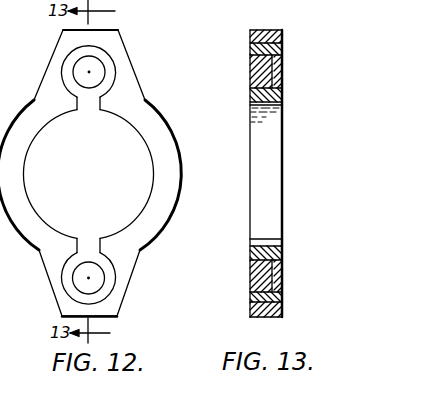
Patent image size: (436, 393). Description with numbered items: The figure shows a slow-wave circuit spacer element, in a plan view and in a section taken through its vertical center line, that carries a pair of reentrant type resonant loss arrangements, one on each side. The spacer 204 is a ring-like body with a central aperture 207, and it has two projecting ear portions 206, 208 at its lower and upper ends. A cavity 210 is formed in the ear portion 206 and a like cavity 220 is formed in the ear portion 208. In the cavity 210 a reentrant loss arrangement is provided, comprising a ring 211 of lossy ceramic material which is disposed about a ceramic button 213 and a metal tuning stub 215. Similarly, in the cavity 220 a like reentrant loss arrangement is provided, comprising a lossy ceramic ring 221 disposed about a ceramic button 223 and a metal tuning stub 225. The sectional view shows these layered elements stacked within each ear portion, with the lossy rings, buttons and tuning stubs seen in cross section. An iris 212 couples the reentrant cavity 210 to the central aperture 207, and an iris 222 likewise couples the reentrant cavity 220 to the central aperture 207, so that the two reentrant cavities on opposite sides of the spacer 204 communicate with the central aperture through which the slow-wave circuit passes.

In FIG. 12, the spacer 204 is at (173, 128).
In FIG. 13, the spacer 204 is at (283, 146).
In FIG. 12, the projecting ear portion 206 is at (123, 298).
In FIG. 13, the projecting ear portion 206 is at (280, 312).
In FIG. 12, the central aperture 207 is at (156, 165).
In FIG. 13, the central aperture 207 is at (258, 150).
In FIG. 12, the projecting ear portion 208 is at (123, 42).
In FIG. 13, the projecting ear portion 208 is at (283, 33).
In FIG. 12, the cavity 210 is at (63, 293).
In FIG. 12, the ring of lossy ceramic material 211 is at (113, 280).
In FIG. 13, the ring of lossy ceramic material 211 is at (283, 298).
In FIG. 12, the iris 212 is at (95, 238).
In FIG. 13, the iris 212 is at (283, 240).
In FIG. 12, the ceramic button 213 is at (78, 272).
In FIG. 13, the ceramic button 213 is at (262, 273).
In FIG. 13, the metal tuning stub 215 is at (280, 275).
In FIG. 12, the cavity 220 is at (117, 70).
In FIG. 12, the lossy ceramic ring 221 is at (105, 88).
In FIG. 13, the lossy ceramic ring 221 is at (283, 52).
In FIG. 12, the iris 222 is at (85, 109).
In FIG. 13, the iris 222 is at (283, 102).
In FIG. 12, the ceramic button 223 is at (78, 67).
In FIG. 13, the ceramic button 223 is at (255, 70).
In FIG. 13, the metal tuning stub 225 is at (280, 77).